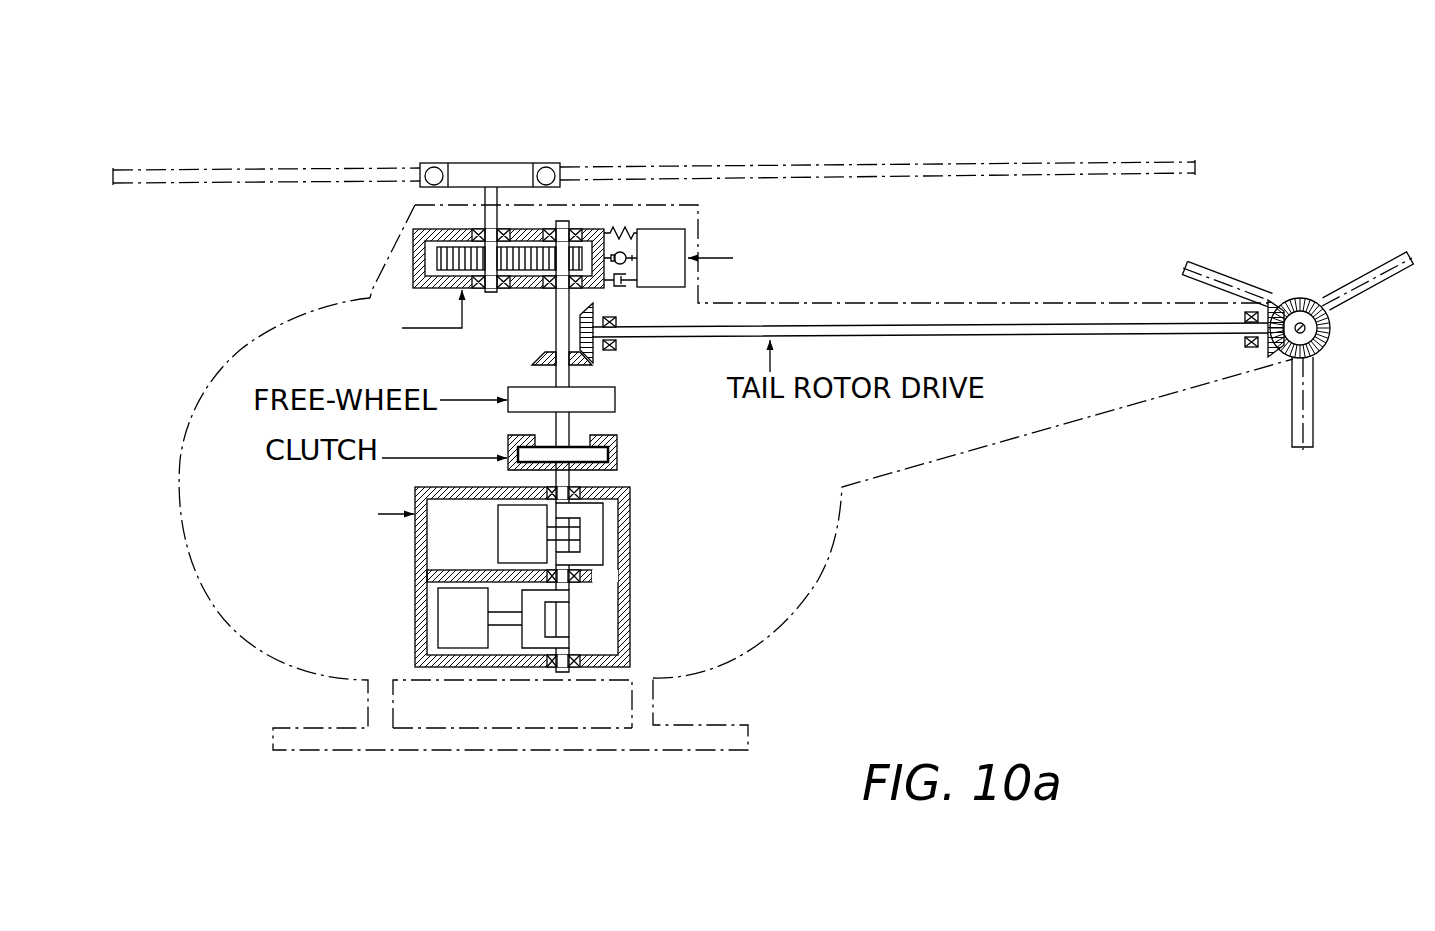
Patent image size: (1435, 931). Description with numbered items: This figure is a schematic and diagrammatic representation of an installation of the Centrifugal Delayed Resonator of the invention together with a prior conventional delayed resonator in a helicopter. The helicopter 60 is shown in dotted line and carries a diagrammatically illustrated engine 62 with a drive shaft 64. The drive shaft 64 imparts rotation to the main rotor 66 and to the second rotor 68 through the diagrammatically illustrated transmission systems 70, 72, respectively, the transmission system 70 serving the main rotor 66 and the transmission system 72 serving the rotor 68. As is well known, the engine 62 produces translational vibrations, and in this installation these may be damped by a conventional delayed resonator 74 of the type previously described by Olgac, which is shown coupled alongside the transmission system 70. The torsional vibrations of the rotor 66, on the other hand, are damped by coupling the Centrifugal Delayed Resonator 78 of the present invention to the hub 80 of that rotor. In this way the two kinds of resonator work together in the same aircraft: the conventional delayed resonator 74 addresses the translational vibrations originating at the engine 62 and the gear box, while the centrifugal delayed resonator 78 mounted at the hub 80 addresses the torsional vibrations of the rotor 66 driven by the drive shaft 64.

The helicopter 60 is at (962, 453).
The engine 62 is at (633, 546).
The drive shaft 64 is at (573, 428).
The rotor 66 is at (1100, 162).
The rotor 68 is at (1370, 306).
The transmission system 70 is at (412, 282).
The transmission system 72 is at (1313, 300).
The conventional delayed resonator 74 is at (697, 232).
The centrifugal delayed resonator 78 is at (420, 165).
The hub 80 is at (546, 130).